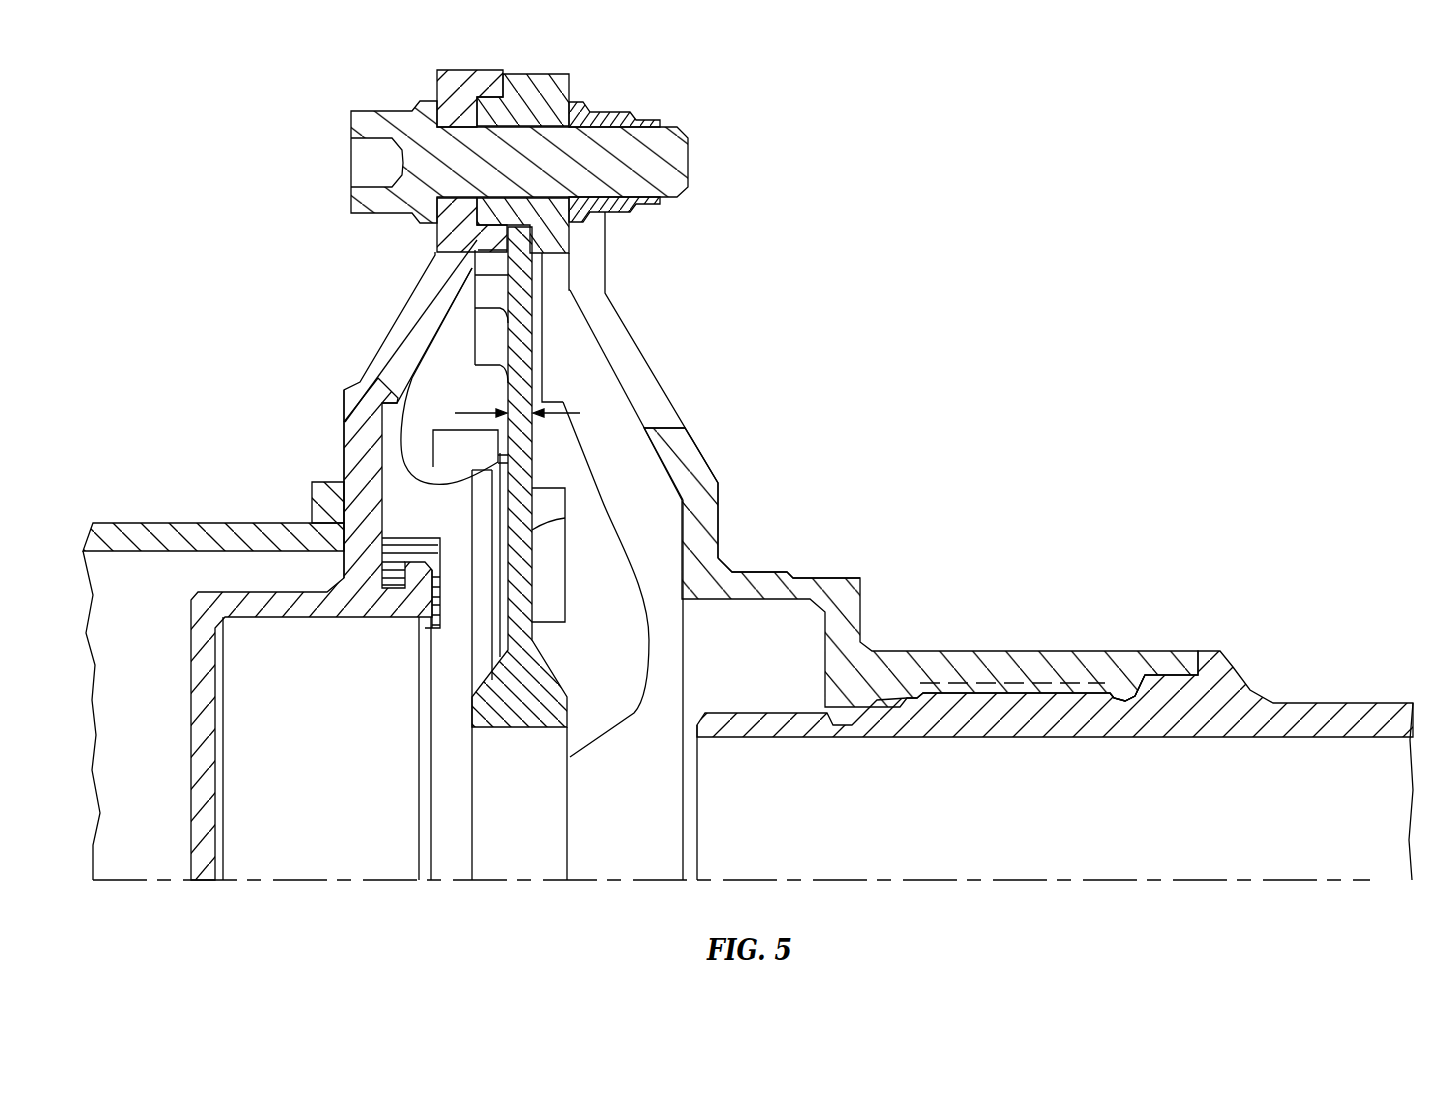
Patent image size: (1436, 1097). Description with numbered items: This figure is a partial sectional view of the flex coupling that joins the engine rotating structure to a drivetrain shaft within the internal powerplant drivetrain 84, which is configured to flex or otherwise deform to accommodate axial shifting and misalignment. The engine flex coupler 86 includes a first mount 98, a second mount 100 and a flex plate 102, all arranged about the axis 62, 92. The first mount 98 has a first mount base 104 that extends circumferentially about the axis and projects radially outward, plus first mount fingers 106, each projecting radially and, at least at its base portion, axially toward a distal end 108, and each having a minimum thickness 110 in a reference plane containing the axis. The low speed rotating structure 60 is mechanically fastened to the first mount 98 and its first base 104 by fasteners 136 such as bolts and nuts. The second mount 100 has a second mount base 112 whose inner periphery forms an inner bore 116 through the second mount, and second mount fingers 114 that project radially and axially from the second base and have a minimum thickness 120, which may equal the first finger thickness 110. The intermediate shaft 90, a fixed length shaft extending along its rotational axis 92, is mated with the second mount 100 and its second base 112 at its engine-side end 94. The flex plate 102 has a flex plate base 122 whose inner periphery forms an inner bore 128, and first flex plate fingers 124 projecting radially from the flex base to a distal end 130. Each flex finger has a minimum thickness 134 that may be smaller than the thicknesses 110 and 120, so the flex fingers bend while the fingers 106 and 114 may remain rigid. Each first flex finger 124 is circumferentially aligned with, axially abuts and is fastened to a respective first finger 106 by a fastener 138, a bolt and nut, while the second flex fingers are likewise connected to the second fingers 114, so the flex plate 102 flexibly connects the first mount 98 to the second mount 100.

The low speed rotating structure 60 is at (120, 513).
The axis 62 is at (731, 917).
The internal powerplant drivetrain 84 is at (1111, 216).
The engine flex coupler 86 is at (690, 107).
The intermediate shaft 90 is at (1358, 692).
The rotational axis 92 is at (1290, 880).
The engine-side end 94 is at (697, 827).
The first mount 98 is at (342, 412).
The second mount 100 is at (707, 455).
The flex plate 102 is at (467, 850).
The first mount base 104 is at (344, 447).
The first mount fingers 106 is at (398, 320).
The distal end 108 is at (458, 68).
The minimum thickness 110 is at (376, 354).
The second mount base 112 is at (722, 535).
The second mount fingers 114 is at (638, 345).
The inner bore 116 is at (1136, 677).
The minimum thickness 120 is at (667, 388).
The flex plate base 122 is at (567, 757).
The first flex plate fingers 124 is at (536, 290).
The inner bore 128 is at (540, 853).
The distal end 130 is at (540, 77).
The minimum thickness 134 is at (580, 413).
The fasteners 136 is at (413, 538).
The fastener 138 is at (693, 160).